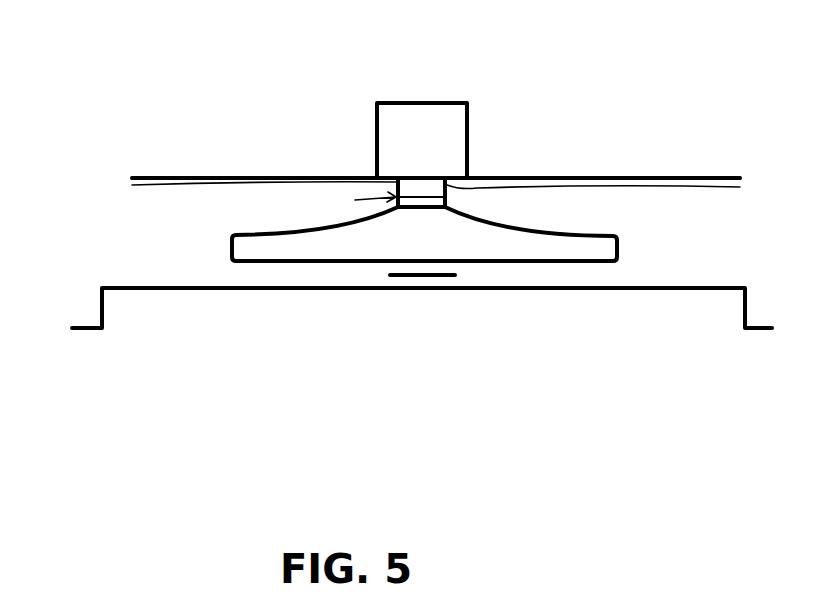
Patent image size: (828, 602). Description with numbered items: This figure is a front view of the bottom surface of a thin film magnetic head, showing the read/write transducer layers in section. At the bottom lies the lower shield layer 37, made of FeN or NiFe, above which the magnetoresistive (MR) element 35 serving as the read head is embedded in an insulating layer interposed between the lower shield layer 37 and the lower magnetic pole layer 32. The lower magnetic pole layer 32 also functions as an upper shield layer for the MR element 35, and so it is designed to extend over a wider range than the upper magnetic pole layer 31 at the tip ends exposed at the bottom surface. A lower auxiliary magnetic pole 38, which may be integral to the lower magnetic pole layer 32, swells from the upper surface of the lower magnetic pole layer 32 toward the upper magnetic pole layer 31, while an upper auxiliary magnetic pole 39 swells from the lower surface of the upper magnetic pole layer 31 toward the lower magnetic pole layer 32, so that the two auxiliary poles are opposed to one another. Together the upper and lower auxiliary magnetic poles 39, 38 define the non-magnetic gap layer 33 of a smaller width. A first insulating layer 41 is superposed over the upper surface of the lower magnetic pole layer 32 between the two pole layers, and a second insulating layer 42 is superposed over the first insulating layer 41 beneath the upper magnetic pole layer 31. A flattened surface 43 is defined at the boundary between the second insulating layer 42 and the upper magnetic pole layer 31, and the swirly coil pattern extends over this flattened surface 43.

The upper magnetic pole layer 31 is at (391, 103).
The lower magnetic pole layer 32 is at (601, 247).
The non-magnetic gap layer 33 is at (349, 208).
The magnetoresistive (MR) element 35 is at (403, 277).
The lower shield layer 37 is at (507, 313).
The lower auxiliary magnetic pole 38 is at (447, 207).
The upper auxiliary magnetic pole 39 is at (478, 188).
The first insulating layer 41 is at (258, 202).
The second insulating layer 42 is at (205, 187).
The flattened surface 43 is at (145, 174).